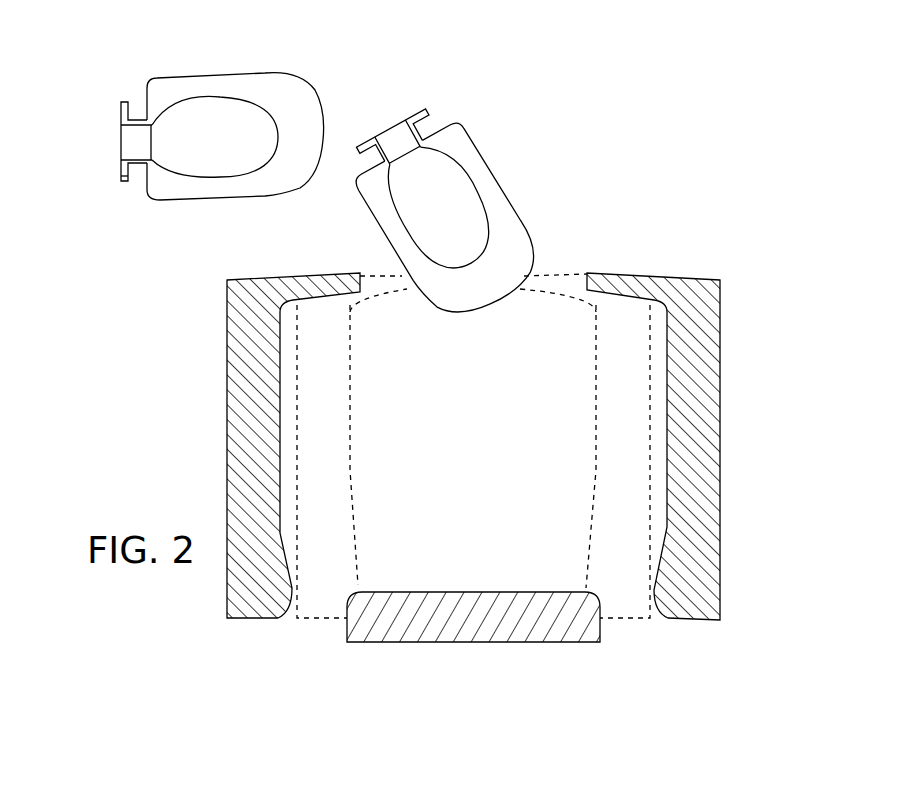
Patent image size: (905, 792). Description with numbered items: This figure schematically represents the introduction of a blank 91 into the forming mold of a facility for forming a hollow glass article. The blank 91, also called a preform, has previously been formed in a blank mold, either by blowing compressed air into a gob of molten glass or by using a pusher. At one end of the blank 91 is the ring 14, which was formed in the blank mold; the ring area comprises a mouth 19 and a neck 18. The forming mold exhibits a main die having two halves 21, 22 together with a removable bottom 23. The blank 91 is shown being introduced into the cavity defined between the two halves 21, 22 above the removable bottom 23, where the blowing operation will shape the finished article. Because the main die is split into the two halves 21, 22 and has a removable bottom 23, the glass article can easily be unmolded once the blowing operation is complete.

The blank 91 is at (150, 82).
The neck 18 is at (121, 115).
The mouth 19 is at (121, 125).
The ring 14 is at (125, 182).
The half of the main die 21 is at (255, 405).
The half of the main die 22 is at (685, 407).
The removable bottom 23 is at (453, 610).